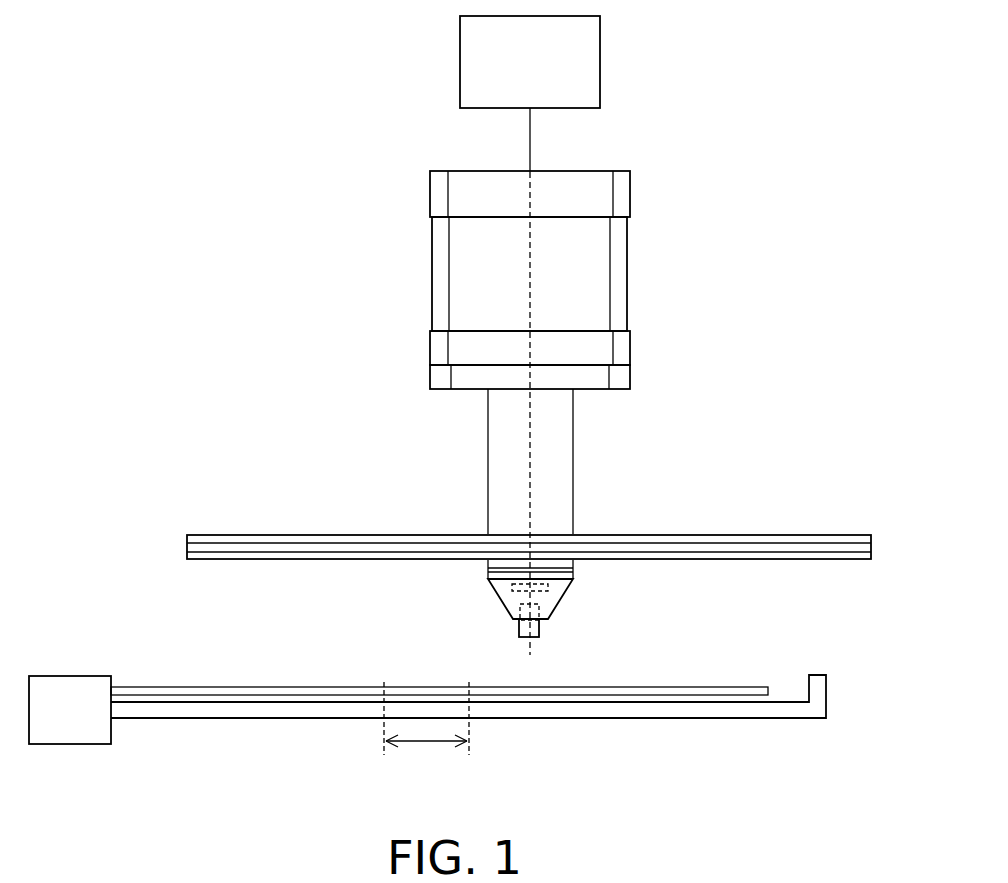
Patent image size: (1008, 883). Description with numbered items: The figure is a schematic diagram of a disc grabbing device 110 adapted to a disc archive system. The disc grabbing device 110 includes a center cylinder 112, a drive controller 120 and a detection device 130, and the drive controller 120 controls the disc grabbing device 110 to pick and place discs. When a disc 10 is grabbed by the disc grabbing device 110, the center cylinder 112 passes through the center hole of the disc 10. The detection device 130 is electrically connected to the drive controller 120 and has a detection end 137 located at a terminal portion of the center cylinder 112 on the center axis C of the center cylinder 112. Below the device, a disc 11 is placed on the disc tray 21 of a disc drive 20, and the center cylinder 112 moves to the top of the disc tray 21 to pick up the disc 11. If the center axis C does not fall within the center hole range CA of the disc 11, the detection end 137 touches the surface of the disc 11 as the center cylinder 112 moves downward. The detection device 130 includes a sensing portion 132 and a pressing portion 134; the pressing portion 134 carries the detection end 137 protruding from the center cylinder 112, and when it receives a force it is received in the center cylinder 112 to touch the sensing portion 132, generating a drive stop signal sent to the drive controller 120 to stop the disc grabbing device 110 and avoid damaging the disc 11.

The disc 10 is at (841, 534).
The disc 11 is at (738, 687).
The disc drive 20 is at (68, 745).
The disc tray 21 is at (241, 719).
The disc grabbing device 110 is at (677, 224).
The center cylinder 112 is at (573, 460).
The drive controller 120 is at (600, 60).
The detection device 130 is at (621, 617).
The sensing portion 132 is at (548, 588).
The pressing portion 134 is at (540, 627).
The detection end 137 is at (540, 637).
The center axis C is at (532, 641).
The center hole range CA is at (426, 728).